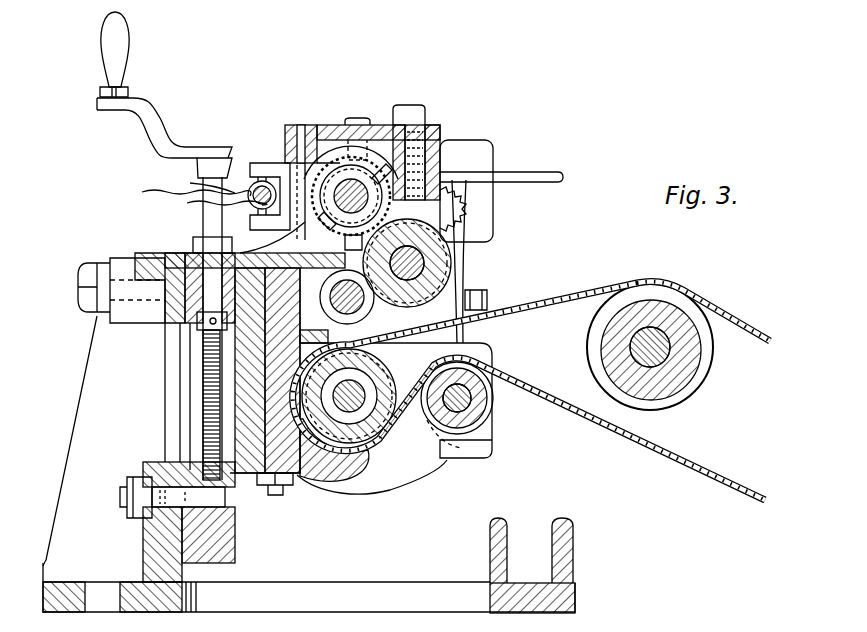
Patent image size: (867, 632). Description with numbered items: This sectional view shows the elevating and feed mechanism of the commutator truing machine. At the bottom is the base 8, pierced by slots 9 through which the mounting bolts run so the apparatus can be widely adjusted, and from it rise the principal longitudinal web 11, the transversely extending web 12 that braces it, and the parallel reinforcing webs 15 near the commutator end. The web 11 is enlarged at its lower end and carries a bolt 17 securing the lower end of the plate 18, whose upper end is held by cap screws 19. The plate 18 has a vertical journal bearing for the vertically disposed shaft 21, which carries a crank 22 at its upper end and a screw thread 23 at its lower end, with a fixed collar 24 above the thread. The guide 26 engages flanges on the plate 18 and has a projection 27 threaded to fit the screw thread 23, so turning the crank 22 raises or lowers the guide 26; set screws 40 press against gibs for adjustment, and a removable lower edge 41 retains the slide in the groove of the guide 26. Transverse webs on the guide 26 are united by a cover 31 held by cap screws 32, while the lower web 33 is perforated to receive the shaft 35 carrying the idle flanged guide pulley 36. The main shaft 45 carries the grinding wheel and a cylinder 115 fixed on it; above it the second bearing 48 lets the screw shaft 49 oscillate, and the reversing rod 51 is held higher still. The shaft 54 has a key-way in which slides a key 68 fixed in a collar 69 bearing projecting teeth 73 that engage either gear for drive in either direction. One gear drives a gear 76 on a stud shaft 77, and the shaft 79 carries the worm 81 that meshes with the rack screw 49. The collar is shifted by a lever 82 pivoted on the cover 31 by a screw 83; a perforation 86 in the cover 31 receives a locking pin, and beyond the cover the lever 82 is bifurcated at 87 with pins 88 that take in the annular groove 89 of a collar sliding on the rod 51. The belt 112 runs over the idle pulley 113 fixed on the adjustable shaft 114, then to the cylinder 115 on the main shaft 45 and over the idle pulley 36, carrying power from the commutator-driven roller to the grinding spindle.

The base 8 is at (357, 596).
The slots 9 is at (103, 592).
The web 11 is at (168, 388).
The transversely extending web 12 is at (80, 411).
The reinforcing webs 15 is at (553, 519).
The bolt 17 is at (127, 512).
The plate 18 is at (200, 441).
The cap screws 19 is at (90, 277).
The vertically disposed shaft 21 is at (202, 228).
The crank 22 is at (148, 133).
The screw thread 23 is at (205, 412).
The collar 24 is at (200, 322).
The guide 26 is at (255, 245).
The projection 27 is at (180, 366).
The cover 31 is at (305, 122).
The cap screws 32 is at (362, 117).
The web 33 is at (403, 488).
The shaft 35 is at (460, 460).
The idle flanged guide pulley 36 is at (486, 418).
The set screws 40 is at (295, 202).
The removable lower edge 41 is at (295, 482).
The main shaft 45 is at (370, 394).
The second bearing 48 is at (330, 329).
The screw shaft 49 is at (370, 310).
The reversing rod 51 is at (199, 178).
The shaft 54 is at (433, 133).
The key 68 is at (490, 241).
The collar 69 is at (461, 143).
The projecting teeth 73 is at (340, 128).
The gear 76 is at (478, 261).
The stud shaft 77 is at (485, 199).
The shaft 79 is at (366, 266).
The worm 81 is at (463, 281).
The lever 82 is at (556, 168).
The screw 83 is at (415, 105).
The perforation 86 is at (290, 126).
The bifurcation 87 is at (282, 168).
The pins 88 is at (250, 182).
The annular groove 89 is at (181, 189).
The belt 112 is at (582, 296).
The idle pulley 113 is at (714, 394).
The shaft 114 is at (668, 350).
The cylinder 115 is at (385, 435).